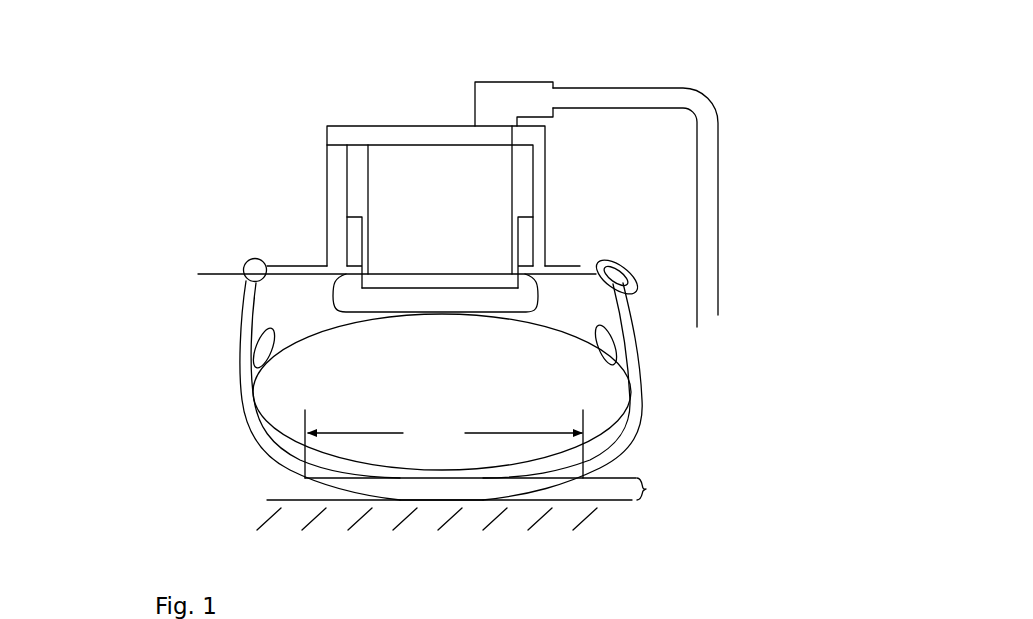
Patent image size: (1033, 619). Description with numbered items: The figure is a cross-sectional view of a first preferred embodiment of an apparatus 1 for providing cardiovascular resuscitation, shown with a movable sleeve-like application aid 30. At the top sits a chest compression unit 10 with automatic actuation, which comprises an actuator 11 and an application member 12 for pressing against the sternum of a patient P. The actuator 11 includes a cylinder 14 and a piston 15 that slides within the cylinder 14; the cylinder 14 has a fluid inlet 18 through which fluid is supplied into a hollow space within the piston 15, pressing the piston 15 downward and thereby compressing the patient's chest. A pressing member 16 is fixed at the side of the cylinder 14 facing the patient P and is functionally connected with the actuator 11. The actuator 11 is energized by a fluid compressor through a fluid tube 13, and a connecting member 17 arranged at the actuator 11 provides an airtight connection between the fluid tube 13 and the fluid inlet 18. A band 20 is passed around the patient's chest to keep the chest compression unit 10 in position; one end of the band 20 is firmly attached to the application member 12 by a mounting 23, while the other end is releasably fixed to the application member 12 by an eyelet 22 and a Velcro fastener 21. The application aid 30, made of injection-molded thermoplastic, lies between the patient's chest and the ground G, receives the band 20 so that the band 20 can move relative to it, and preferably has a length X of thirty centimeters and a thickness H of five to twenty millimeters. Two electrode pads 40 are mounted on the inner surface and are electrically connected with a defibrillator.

The apparatus 1 is at (207, 68).
The chest compression unit 10 is at (365, 98).
The actuator 11 is at (327, 126).
The application member 12 is at (576, 264).
The fluid tube 13 is at (652, 85).
The cylinder 14 is at (333, 175).
The piston 15 is at (355, 213).
The pressing member 16 is at (340, 283).
The connecting member 17 is at (483, 87).
The fluid inlet 18 is at (493, 137).
The band 20 is at (243, 327).
The Velcro fastener 21 is at (640, 320).
The eyelet 22 is at (625, 262).
The mounting 23 is at (243, 274).
The application aid 30 is at (318, 477).
The electrode pads 40 is at (258, 350).
The patient P is at (280, 395).
The length X is at (444, 444).
The thickness H is at (654, 489).
The ground G is at (446, 518).